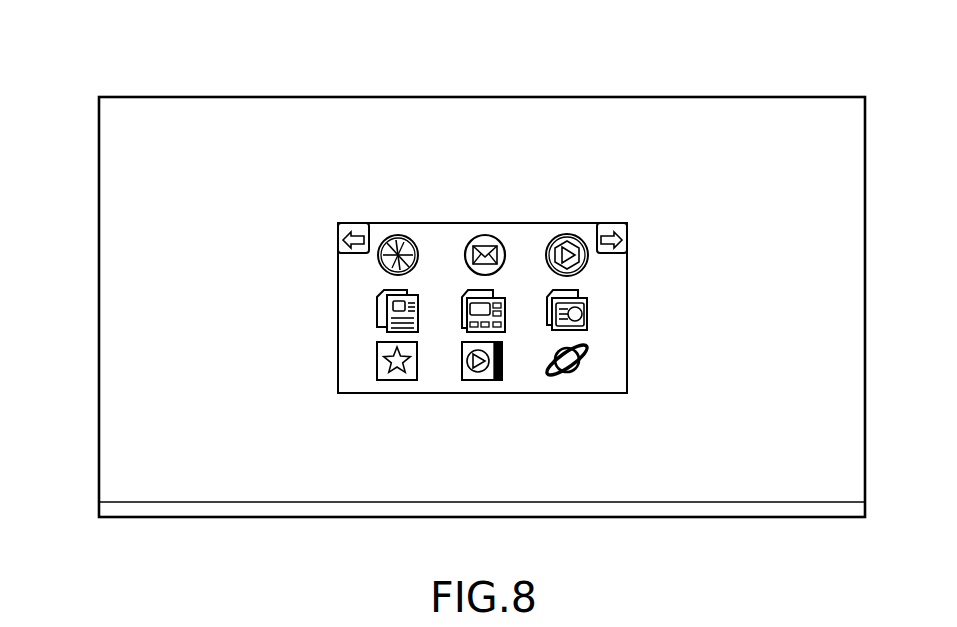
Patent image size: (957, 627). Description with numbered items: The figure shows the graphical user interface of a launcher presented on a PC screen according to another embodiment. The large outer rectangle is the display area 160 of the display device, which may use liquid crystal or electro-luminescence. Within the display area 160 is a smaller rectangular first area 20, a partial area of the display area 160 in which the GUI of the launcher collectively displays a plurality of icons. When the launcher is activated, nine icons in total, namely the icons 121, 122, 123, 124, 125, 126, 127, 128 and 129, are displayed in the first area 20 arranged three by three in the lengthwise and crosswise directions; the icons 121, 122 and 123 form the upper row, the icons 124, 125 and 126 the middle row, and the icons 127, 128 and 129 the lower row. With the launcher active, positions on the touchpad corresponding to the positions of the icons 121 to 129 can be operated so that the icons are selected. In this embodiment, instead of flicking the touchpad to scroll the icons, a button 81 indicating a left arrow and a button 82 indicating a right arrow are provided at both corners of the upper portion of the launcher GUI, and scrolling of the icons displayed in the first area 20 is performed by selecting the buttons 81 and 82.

The display area 160 is at (755, 97).
The first area 20 is at (438, 223).
The button 81 is at (351, 223).
The button 82 is at (621, 223).
The icon 121 is at (398, 236).
The icon 122 is at (485, 236).
The icon 123 is at (567, 236).
The icon 124 is at (373, 320).
The icon 125 is at (507, 315).
The icon 126 is at (588, 315).
The icon 127 is at (398, 381).
The icon 128 is at (482, 381).
The icon 129 is at (585, 382).